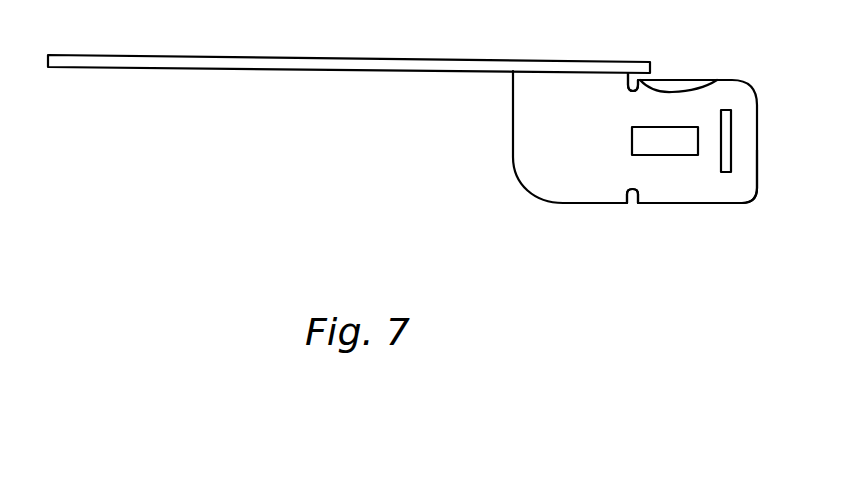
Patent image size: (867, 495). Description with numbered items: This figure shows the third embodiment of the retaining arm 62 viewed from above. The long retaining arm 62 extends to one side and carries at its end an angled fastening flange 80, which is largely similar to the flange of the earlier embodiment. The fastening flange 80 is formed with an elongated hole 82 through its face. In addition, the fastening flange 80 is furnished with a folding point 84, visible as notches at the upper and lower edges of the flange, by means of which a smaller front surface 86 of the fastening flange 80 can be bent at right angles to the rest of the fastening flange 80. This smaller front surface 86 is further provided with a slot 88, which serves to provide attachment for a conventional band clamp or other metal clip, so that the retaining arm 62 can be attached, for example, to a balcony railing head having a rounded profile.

The retaining arm 62 is at (315, 93).
The fastening flange 80 is at (513, 128).
The elongated hole 82 is at (663, 146).
The folding point 84 is at (696, 86).
The front surface 86 is at (693, 210).
The slot 88 is at (730, 165).